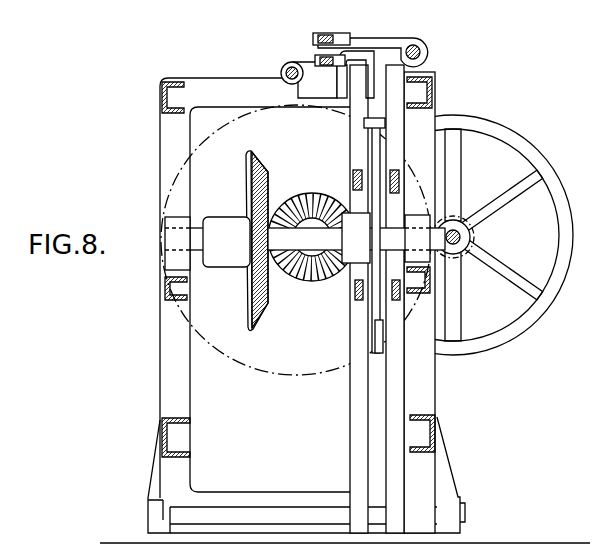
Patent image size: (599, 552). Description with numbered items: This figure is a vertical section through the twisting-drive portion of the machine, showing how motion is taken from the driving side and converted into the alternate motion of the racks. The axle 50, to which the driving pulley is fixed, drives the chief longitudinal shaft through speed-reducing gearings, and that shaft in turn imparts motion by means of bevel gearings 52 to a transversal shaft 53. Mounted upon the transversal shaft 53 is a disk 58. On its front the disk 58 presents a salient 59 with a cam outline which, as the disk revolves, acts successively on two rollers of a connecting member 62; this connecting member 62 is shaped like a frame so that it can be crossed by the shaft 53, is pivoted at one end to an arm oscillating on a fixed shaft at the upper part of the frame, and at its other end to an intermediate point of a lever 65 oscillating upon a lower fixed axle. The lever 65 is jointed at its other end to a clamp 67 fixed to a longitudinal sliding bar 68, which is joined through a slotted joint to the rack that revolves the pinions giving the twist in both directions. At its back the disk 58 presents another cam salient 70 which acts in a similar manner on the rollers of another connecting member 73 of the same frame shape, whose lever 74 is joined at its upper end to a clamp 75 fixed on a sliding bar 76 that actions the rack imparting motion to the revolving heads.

The axle 50 is at (458, 242).
The bevel gearings 52 is at (268, 205).
The transversal shaft 53 is at (296, 244).
The disk 58 is at (378, 316).
The salient 59 is at (378, 152).
The connecting member 62 is at (422, 180).
The lever 65 is at (390, 97).
The clamp 67 is at (377, 45).
The sliding bar 68 is at (421, 45).
The cam salient 70 is at (362, 120).
The connecting member 73 is at (354, 184).
The lever 74 is at (362, 388).
The clamp 75 is at (312, 60).
The sliding bar 76 is at (288, 70).